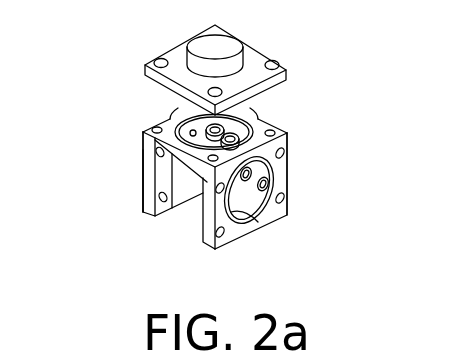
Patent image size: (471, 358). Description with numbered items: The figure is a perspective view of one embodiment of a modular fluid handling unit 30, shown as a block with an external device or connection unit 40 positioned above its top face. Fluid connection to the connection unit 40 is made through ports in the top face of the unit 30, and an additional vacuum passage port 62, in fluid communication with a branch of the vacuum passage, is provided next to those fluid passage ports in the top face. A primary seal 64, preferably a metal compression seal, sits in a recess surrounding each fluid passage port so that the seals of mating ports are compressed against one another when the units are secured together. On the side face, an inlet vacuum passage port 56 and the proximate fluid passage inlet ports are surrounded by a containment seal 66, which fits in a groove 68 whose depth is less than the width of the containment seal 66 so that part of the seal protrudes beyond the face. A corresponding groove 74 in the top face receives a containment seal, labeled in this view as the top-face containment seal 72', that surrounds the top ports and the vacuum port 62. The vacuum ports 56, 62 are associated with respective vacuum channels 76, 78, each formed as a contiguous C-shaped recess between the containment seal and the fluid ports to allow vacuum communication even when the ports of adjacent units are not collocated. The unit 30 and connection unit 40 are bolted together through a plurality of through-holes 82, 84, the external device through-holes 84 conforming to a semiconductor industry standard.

The modular fluid handling unit 30 is at (290, 162).
The external device or connection unit 40 is at (256, 57).
The inlet vacuum passage port 56 is at (287, 134).
The additional vacuum passage port 62 is at (178, 127).
The primary seal 64 is at (213, 136).
The containment seal 66 is at (253, 222).
The groove 68 is at (203, 228).
The small port 72' is at (149, 81).
The groove 74 is at (243, 108).
The vacuum channel 76 is at (258, 222).
The vacuum channel 78 is at (143, 182).
The through-hole 82 is at (223, 237).
The external device through-hole 84 is at (143, 135).